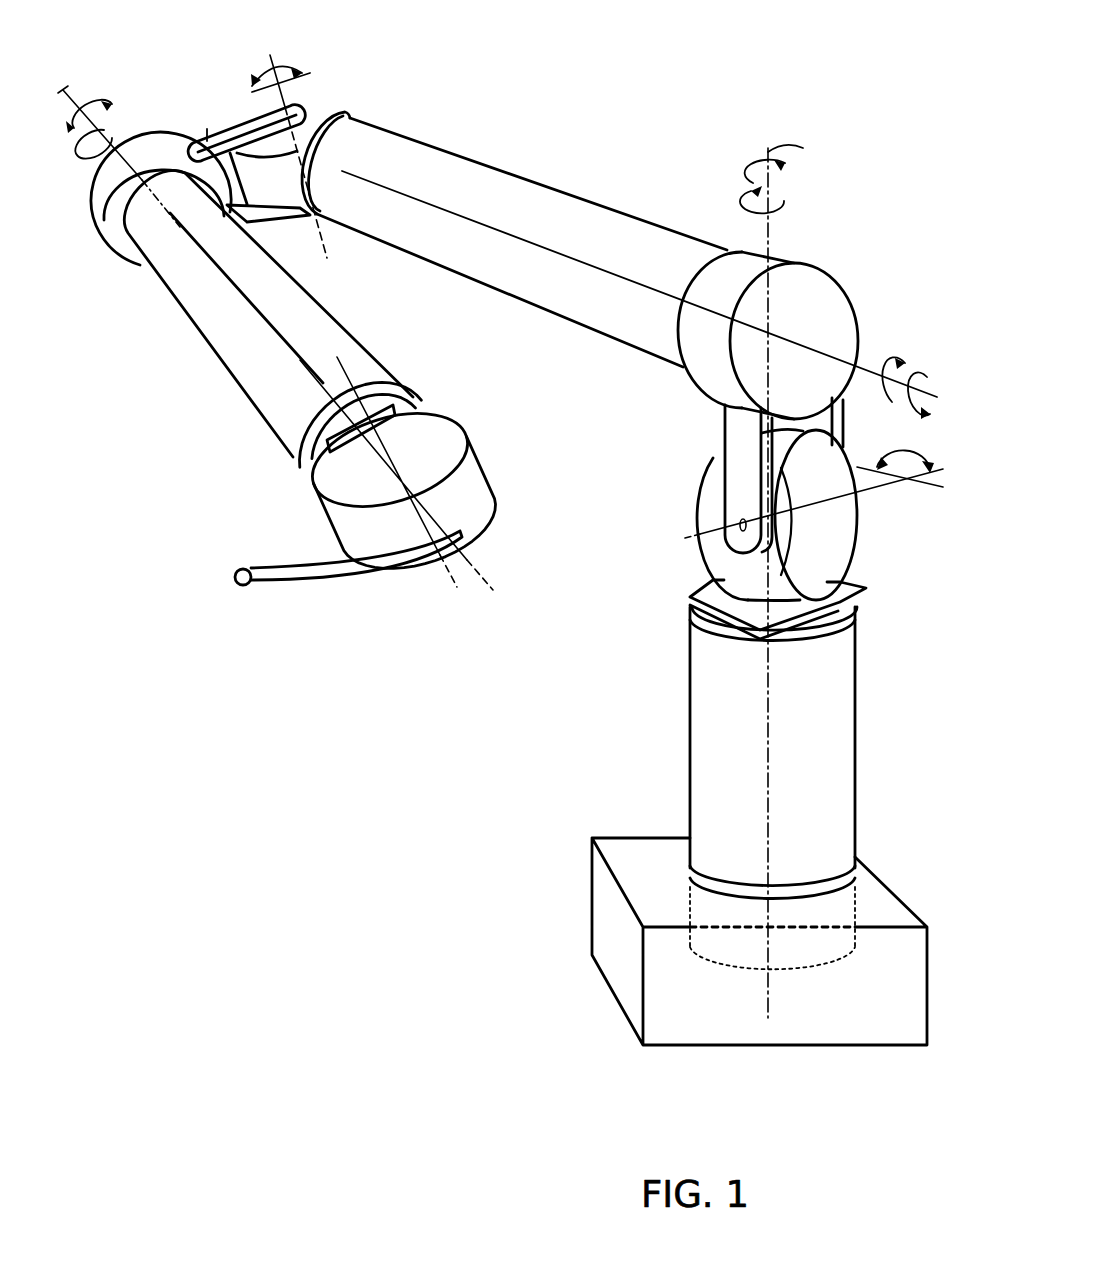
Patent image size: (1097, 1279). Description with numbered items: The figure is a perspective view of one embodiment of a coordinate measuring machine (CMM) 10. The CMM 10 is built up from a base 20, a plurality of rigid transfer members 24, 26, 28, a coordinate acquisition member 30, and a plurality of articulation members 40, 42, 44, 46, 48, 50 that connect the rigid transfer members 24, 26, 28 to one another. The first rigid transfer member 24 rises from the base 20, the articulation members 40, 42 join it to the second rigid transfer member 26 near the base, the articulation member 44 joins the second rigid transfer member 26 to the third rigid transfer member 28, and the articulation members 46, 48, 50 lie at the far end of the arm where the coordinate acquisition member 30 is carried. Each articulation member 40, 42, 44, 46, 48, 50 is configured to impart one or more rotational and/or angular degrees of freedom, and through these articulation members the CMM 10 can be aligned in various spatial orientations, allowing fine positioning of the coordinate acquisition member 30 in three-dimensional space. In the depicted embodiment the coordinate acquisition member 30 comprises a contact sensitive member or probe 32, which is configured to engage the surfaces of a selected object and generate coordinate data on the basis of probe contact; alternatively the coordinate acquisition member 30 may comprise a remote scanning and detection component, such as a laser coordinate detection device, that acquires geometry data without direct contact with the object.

The coordinate measuring machine 10 is at (723, 43).
The base 20 is at (603, 903).
The rigid transfer member 24 is at (837, 698).
The rigid transfer member 26 is at (465, 177).
The rigid transfer member 28 is at (200, 318).
The coordinate acquisition member 30 is at (337, 577).
The probe 32 is at (253, 583).
The articulation member 40 is at (847, 911).
The articulation member 42 is at (842, 527).
The articulation member 44 is at (777, 258).
The articulation member 46 is at (333, 107).
The articulation member 48 is at (97, 213).
The articulation member 50 is at (472, 462).